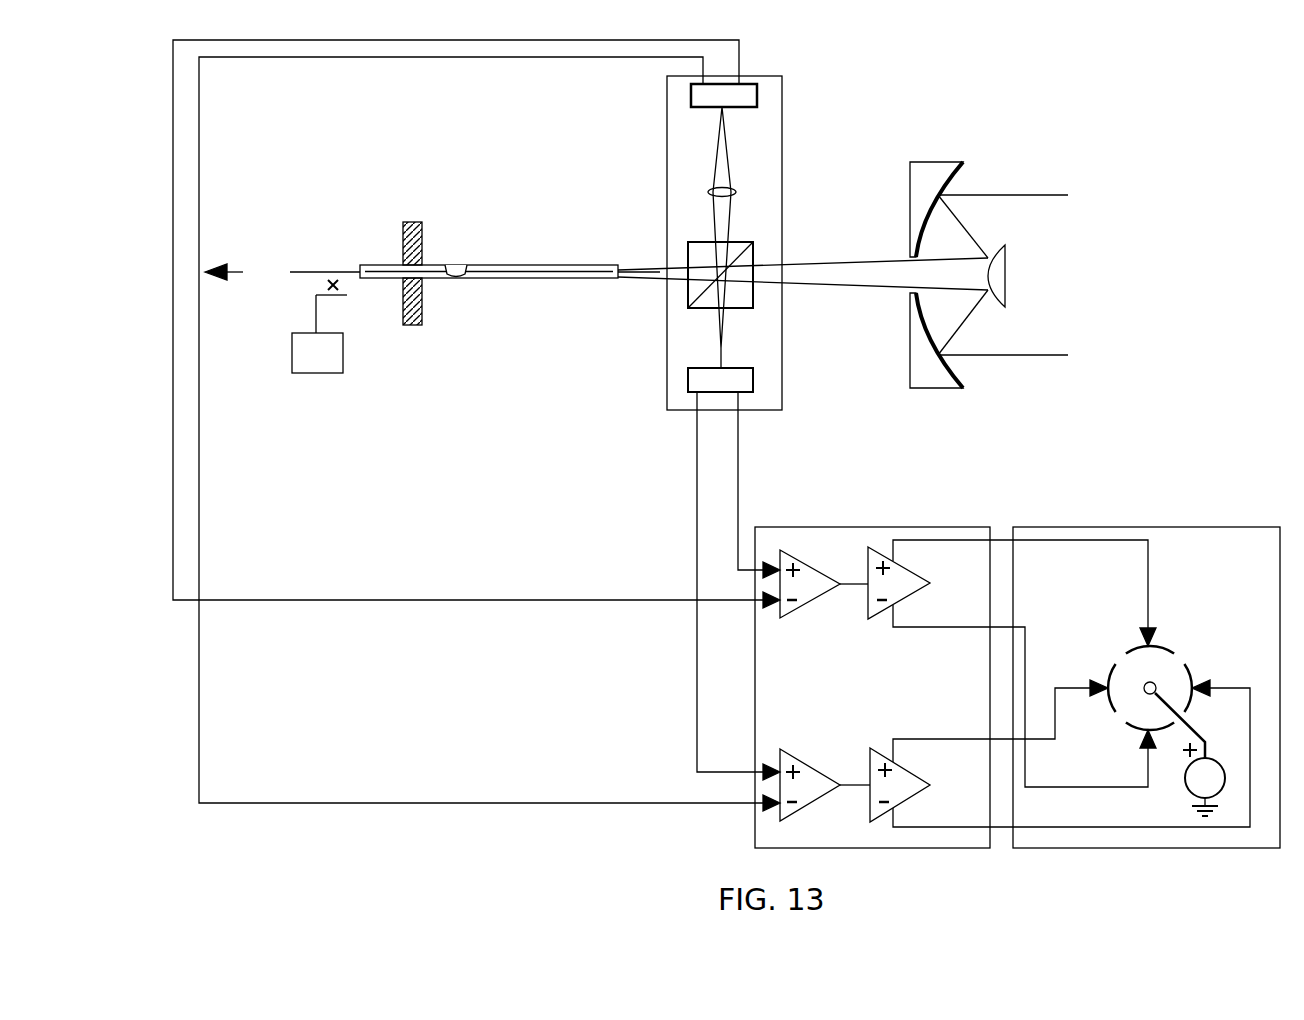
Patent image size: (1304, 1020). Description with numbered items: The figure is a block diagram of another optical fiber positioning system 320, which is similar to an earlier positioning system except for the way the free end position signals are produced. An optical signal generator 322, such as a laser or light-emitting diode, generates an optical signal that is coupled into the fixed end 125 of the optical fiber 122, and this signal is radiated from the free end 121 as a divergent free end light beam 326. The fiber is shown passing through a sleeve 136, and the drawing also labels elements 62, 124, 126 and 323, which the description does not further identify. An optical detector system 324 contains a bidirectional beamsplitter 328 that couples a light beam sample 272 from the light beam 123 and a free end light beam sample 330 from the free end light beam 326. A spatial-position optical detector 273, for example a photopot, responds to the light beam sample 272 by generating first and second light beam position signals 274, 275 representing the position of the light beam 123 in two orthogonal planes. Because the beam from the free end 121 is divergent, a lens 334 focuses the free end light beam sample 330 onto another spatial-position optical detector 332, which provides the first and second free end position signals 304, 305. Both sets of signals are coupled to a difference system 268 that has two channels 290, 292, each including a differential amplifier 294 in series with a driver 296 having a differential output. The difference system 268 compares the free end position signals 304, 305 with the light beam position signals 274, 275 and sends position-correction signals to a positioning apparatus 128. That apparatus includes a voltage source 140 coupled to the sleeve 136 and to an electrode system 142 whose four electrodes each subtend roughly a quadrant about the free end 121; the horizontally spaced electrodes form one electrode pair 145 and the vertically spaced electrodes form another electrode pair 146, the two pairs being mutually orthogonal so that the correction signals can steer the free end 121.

The positioning system 320 is at (1100, 405).
The optical detector system 324 is at (655, 125).
The spatial-position optical detector 332 is at (757, 93).
The lens 334 is at (712, 191).
The free end light beam sample 330 is at (713, 212).
The bidirectional beamsplitter 328 is at (752, 250).
The light beam sample 272 is at (725, 333).
The spatial-position optical detector 273 is at (753, 380).
The free end light beam 326 is at (638, 283).
The concave mirror 62 is at (898, 177).
The light beam 123 is at (847, 262).
The fiber clamp 126 is at (422, 228).
The optical fiber 122 is at (463, 252).
The sleeve 136 is at (530, 256).
The fixed end 125 is at (368, 266).
The output light direction 124 is at (282, 273).
The free end 121 is at (604, 279).
The position actuator link 323 is at (316, 309).
The optical signal generator 322 is at (343, 355).
The first light beam position signal 274 is at (697, 446).
The second light beam position signal 275 is at (740, 444).
The difference system 268 is at (886, 512).
The positioning apparatus 128 is at (1221, 512).
The differential amplifier 294 is at (794, 552).
The driver 296 is at (916, 570).
The channel 290 is at (826, 631).
The channel 292 is at (882, 732).
The first free end position signal 304 is at (627, 603).
The second free end position signal 305 is at (641, 805).
The electrode pair 146 is at (1137, 648).
The electrode pair 145 is at (1110, 670).
The electrode system 142 is at (1182, 634).
The voltage source 140 is at (1186, 778).